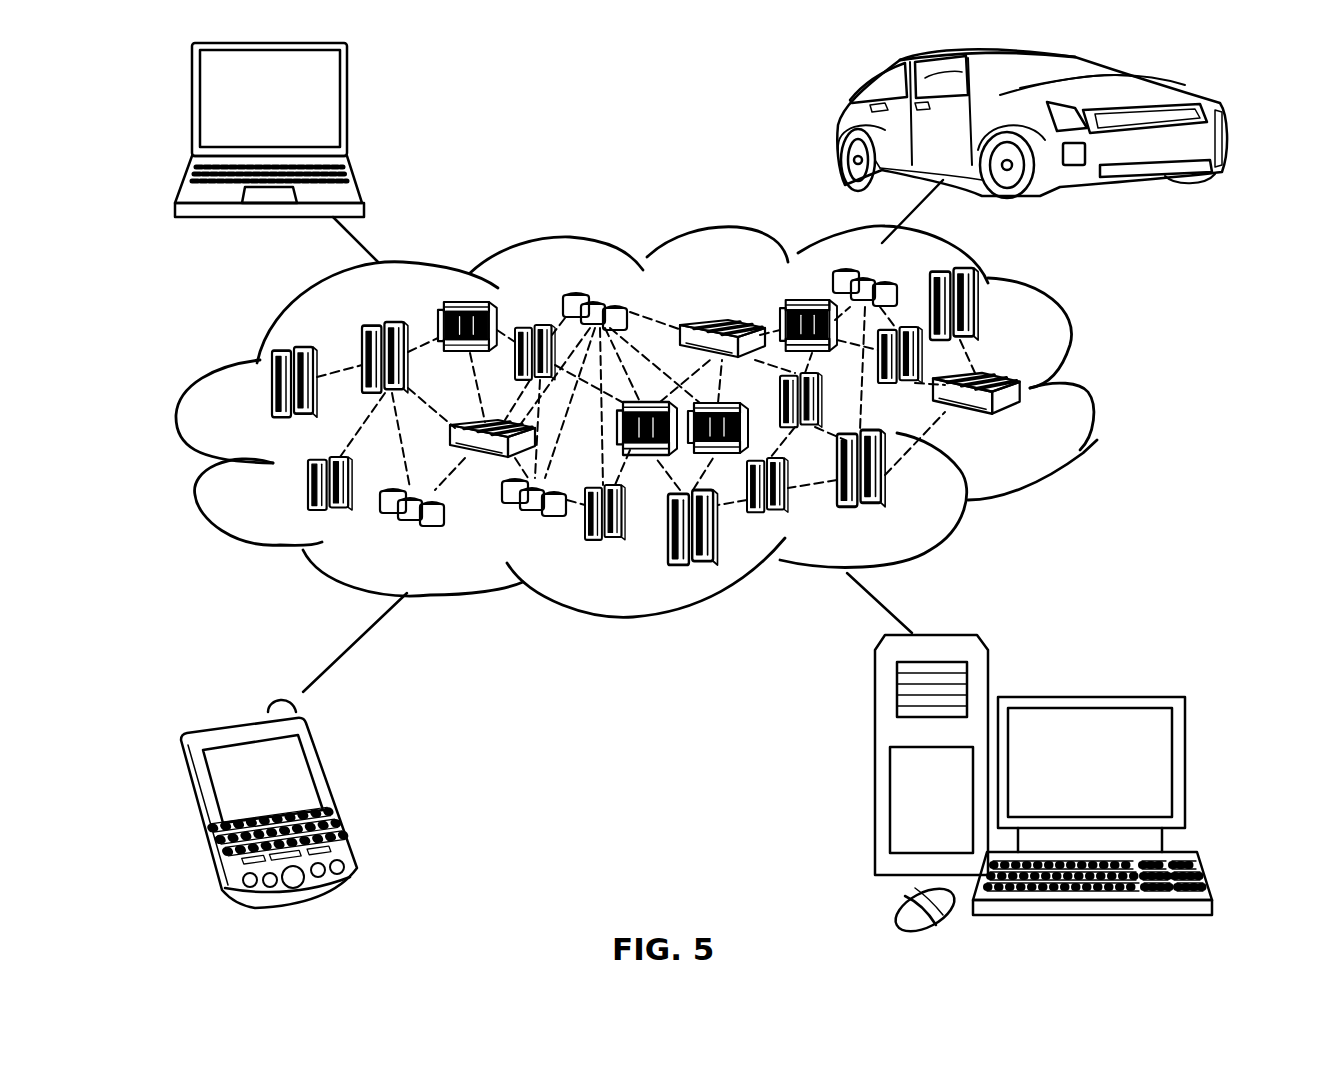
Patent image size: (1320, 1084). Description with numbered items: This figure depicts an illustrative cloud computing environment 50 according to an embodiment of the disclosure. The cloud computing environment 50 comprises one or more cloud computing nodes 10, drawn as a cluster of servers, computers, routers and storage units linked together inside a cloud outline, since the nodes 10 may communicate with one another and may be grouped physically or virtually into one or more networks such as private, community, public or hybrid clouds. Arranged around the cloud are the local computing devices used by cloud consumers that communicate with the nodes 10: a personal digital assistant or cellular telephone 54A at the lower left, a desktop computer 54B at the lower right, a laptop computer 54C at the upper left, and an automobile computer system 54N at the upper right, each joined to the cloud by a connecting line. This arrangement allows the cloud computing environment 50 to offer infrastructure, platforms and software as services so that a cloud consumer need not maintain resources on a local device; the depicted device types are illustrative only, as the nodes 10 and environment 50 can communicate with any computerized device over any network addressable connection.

The laptop computer 54C is at (347, 108).
The automobile computer system 54N is at (840, 124).
The personal digital assistant or cellular telephone 54A is at (333, 790).
The desktop computer 54B is at (1088, 697).
The cloud computing environment 50 is at (668, 421).
The cloud computing node 10 is at (1024, 425).